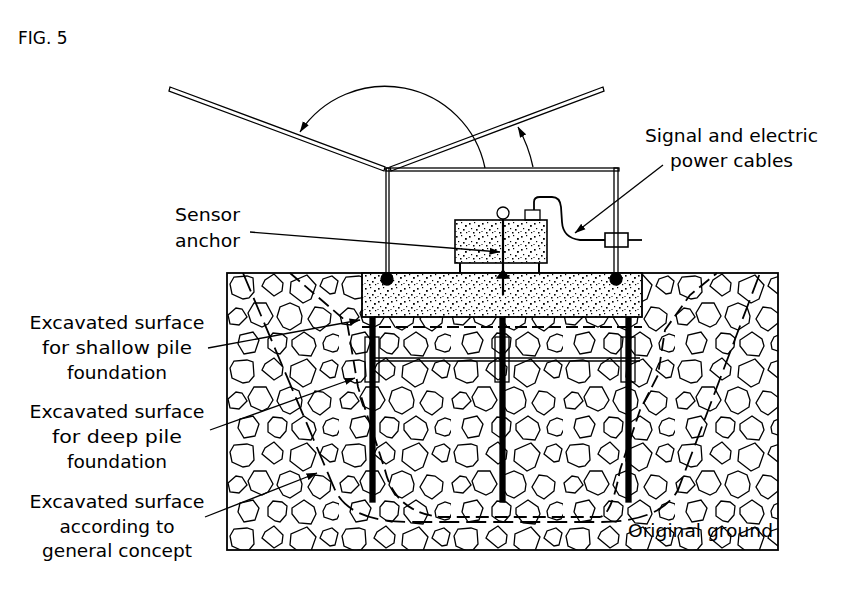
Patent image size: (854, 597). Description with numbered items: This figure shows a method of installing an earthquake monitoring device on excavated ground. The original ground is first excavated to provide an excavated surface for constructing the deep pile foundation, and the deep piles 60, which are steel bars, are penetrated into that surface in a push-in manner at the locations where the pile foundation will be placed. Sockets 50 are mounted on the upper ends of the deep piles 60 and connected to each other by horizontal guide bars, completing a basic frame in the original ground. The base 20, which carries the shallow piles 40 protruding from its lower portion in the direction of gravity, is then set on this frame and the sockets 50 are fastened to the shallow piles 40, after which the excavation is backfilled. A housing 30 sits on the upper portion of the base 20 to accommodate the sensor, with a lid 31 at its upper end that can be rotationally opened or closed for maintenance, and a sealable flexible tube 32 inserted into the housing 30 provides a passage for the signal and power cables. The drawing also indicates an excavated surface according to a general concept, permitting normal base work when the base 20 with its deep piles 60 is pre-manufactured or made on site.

The base 20 is at (455, 233).
The housing 30 is at (383, 196).
The lid 31 is at (583, 167).
The sealable flexible tube 32 is at (630, 232).
The shallow piles 40 is at (512, 325).
The sockets 50 is at (513, 373).
The deep piles 60 is at (763, 512).